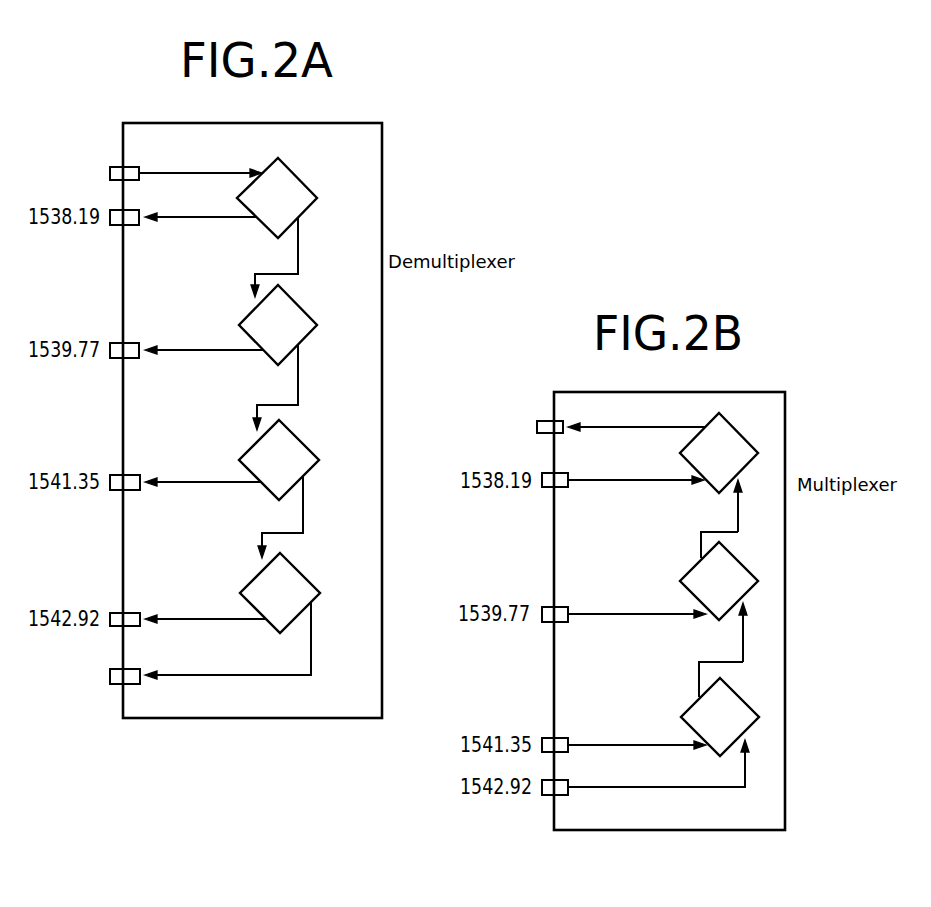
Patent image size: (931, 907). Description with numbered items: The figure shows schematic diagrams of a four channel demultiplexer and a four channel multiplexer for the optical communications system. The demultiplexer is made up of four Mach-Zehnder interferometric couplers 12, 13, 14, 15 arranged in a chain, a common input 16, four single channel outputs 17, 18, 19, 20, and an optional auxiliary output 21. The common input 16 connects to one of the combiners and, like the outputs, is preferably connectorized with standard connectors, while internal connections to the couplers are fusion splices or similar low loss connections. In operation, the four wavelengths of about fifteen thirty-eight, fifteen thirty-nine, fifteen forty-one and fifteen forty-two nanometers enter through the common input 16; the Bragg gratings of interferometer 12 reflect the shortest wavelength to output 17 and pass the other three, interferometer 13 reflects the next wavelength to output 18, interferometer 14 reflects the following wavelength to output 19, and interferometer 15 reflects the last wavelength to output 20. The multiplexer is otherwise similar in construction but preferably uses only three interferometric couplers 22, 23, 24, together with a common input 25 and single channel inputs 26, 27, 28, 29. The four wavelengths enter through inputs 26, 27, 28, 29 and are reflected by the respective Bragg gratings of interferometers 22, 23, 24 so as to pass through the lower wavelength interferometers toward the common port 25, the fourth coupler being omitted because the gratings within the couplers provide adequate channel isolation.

In FIG. 2A, the Mach-Zehnder interferometric coupler 12 is at (298, 188).
In FIG. 2A, the Mach-Zehnder interferometric coupler 13 is at (300, 320).
In FIG. 2A, the Mach-Zehnder interferometric coupler 14 is at (300, 450).
In FIG. 2A, the Mach-Zehnder interferometric coupler 15 is at (303, 585).
In FIG. 2A, the common input 16 is at (116, 168).
In FIG. 2A, the single channel output 17 is at (116, 212).
In FIG. 2A, the single channel output 18 is at (116, 346).
In FIG. 2A, the single channel output 19 is at (116, 478).
In FIG. 2A, the single channel output 20 is at (116, 614).
In FIG. 2A, the auxiliary output 21 is at (116, 674).
In FIG. 2B, the Mach-Zehnder interferometric coupler 22 is at (740, 445).
In FIG. 2B, the Mach-Zehnder interferometric coupler 23 is at (742, 570).
In FIG. 2B, the Mach-Zehnder interferometric coupler 24 is at (742, 705).
In FIG. 2B, the common input 25 is at (540, 422).
In FIG. 2B, the single channel input 26 is at (545, 474).
In FIG. 2B, the single channel input 27 is at (545, 608).
In FIG. 2B, the single channel input 28 is at (545, 739).
In FIG. 2B, the single channel input 29 is at (545, 796).